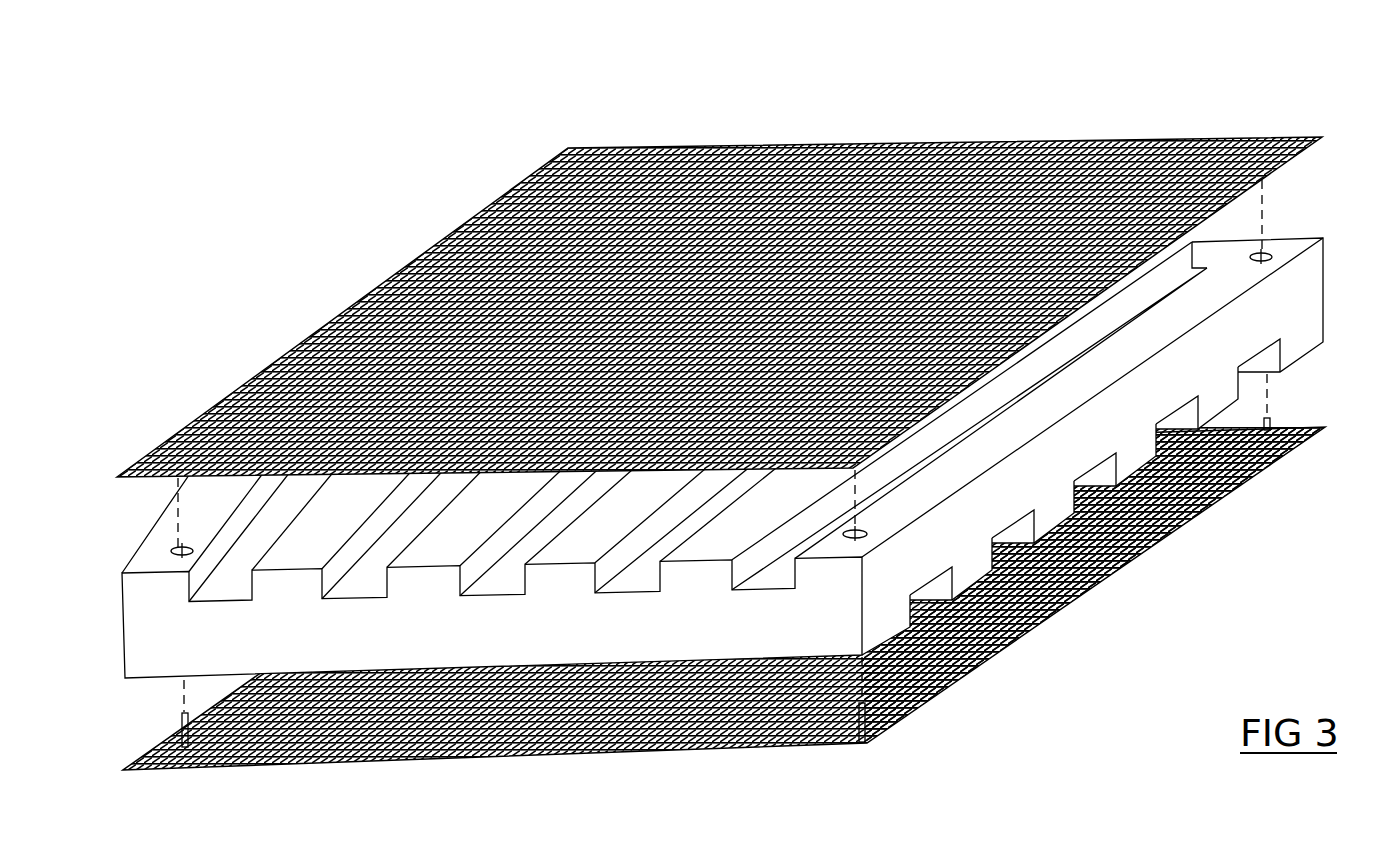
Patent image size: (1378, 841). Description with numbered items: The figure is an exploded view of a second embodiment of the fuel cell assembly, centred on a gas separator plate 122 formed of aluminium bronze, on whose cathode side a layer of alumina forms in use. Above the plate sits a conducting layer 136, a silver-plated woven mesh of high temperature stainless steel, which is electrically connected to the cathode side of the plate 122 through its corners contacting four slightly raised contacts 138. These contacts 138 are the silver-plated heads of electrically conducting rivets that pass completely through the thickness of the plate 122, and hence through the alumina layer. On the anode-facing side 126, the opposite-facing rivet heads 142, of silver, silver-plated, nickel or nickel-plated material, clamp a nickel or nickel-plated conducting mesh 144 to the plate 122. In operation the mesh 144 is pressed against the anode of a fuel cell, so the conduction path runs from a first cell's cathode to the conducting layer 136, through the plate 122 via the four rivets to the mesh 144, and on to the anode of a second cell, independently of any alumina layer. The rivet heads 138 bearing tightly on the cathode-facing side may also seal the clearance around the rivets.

The gas separator plate 122 is at (122, 627).
The anode-facing side 126 is at (385, 678).
The conducting layer 136 is at (1078, 141).
The raised contacts 138 is at (180, 548).
The rivet heads 142 is at (178, 740).
The conducting mesh 144 is at (1080, 594).